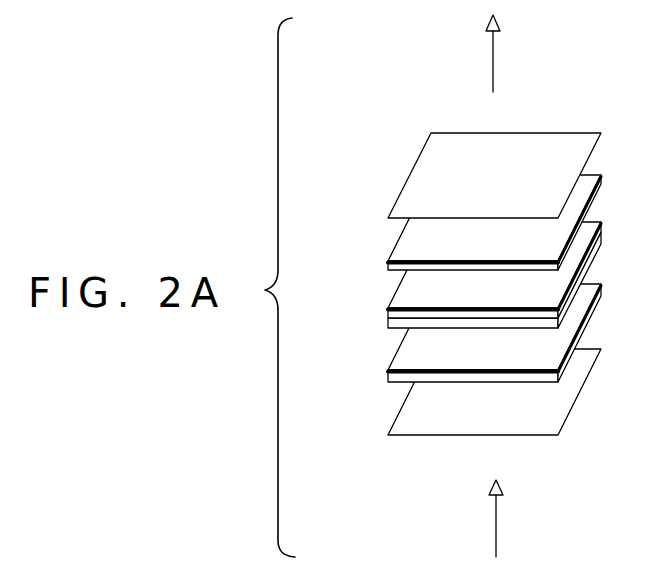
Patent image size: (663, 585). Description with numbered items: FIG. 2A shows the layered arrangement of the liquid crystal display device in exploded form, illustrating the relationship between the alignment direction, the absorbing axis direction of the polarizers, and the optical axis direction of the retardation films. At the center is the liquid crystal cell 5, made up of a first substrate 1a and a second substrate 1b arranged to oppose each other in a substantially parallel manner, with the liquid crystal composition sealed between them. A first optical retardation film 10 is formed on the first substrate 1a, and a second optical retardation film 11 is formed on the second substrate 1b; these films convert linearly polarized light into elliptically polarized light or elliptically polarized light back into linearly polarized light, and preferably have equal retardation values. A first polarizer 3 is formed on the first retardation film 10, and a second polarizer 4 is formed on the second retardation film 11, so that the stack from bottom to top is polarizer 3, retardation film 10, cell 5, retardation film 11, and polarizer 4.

The first polarizer 3 is at (410, 417).
The first optical retardation film 10 is at (388, 376).
The liquid crystal cell 5 is at (451, 288).
The first substrate 1a is at (388, 327).
The second substrate 1b is at (388, 312).
The second optical retardation film 11 is at (388, 267).
The second polarizer 4 is at (425, 170).